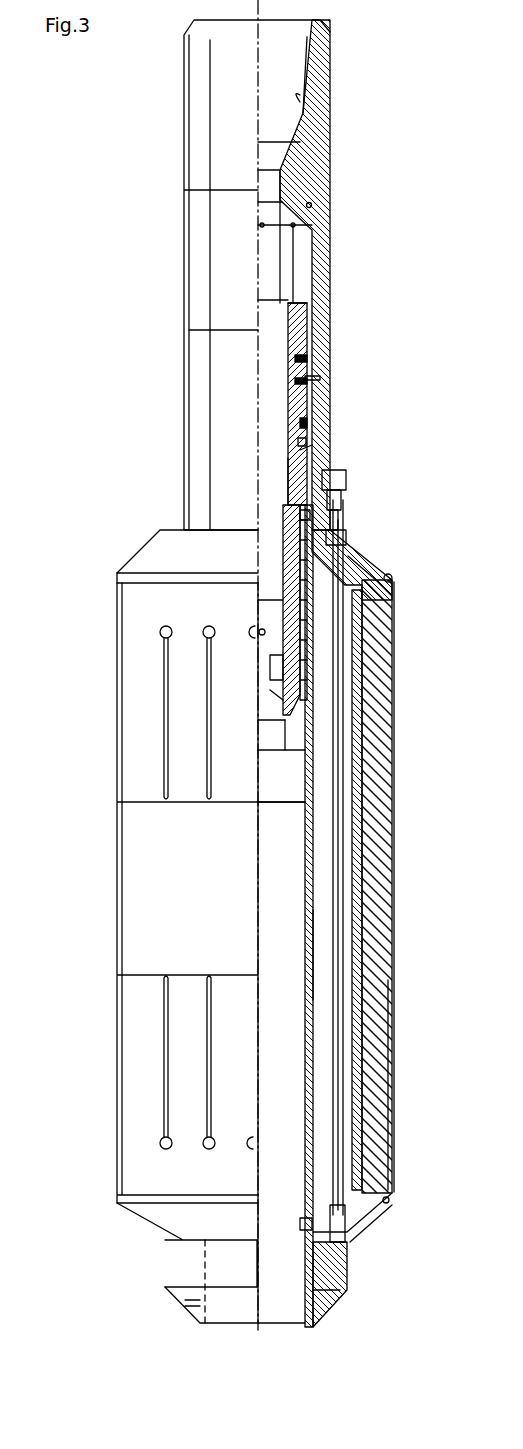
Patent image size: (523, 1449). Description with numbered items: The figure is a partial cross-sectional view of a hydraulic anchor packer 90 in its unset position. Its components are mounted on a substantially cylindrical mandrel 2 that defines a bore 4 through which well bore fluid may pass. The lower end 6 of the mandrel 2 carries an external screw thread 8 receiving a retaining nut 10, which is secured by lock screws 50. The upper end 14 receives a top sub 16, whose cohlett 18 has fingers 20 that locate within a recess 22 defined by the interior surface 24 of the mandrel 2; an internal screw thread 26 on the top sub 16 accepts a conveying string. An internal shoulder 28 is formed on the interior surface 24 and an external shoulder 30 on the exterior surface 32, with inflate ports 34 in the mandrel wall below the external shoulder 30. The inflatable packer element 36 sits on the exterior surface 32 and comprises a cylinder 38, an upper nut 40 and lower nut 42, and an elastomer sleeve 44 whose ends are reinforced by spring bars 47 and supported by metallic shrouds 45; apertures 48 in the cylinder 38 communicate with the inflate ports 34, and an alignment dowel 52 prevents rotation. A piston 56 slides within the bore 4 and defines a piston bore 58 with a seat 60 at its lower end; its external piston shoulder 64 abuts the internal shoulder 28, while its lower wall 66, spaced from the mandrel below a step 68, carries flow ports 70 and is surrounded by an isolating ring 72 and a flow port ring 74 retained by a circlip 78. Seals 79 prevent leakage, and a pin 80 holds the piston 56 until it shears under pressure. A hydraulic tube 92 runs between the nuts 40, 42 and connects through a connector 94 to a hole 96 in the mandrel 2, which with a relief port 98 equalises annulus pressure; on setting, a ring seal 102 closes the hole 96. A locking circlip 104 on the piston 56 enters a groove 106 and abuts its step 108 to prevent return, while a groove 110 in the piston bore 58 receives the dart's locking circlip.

The mandrel 2 is at (322, 262).
The bore 4 is at (285, 1108).
The lower end 6 is at (320, 1275).
The external screw thread 8 is at (330, 1298).
The retaining nut 10 is at (165, 1260).
The upper end 14 is at (310, 300).
The top sub 16 is at (324, 52).
The cohlett 18 is at (270, 257).
The fingers 20 is at (303, 325).
The recess 22 is at (296, 358).
The interior surface 24 is at (320, 450).
The internal screw thread 26 is at (302, 100).
The internal shoulder 28 is at (290, 470).
The external shoulder 30 is at (345, 538).
The exterior surface 32 is at (305, 862).
The inflate ports 34 is at (345, 612).
The inflatable packer element 36 is at (404, 860).
The cylinder 38 is at (386, 1025).
The upper nut 40 is at (378, 558).
The lower nut 42 is at (360, 1232).
The elastomer sleeve 44 is at (390, 934).
The supporting shrouds 45 is at (130, 628).
The spring bars 47 is at (392, 580).
The apertures 48 is at (362, 655).
The lock screws 50 is at (185, 1300).
The alignment dowel 52 is at (168, 530).
The piston 56 is at (270, 590).
The piston bore 58 is at (270, 336).
The seat 60 is at (275, 672).
The external piston shoulder 64 is at (303, 422).
The lower wall 66 is at (290, 492).
The step 68 is at (340, 520).
The flow ports 70 is at (285, 648).
The isolating ring 72 is at (300, 557).
The flow port ring 74 is at (300, 620).
The circlip 78 is at (285, 735).
The seals 79 is at (312, 205).
The pin 80 is at (320, 378).
The hydraulic anchor packer 90 is at (160, 140).
The hydraulic tube 92 is at (325, 918).
The hydraulic tube connector 94 is at (340, 475).
The hole 96 is at (302, 442).
The relief port 98 is at (340, 498).
The ring seal 102 is at (296, 381).
The locking circlip 104 is at (300, 682).
The groove 106 is at (275, 780).
The step 108 is at (290, 752).
The groove 110 is at (280, 700).